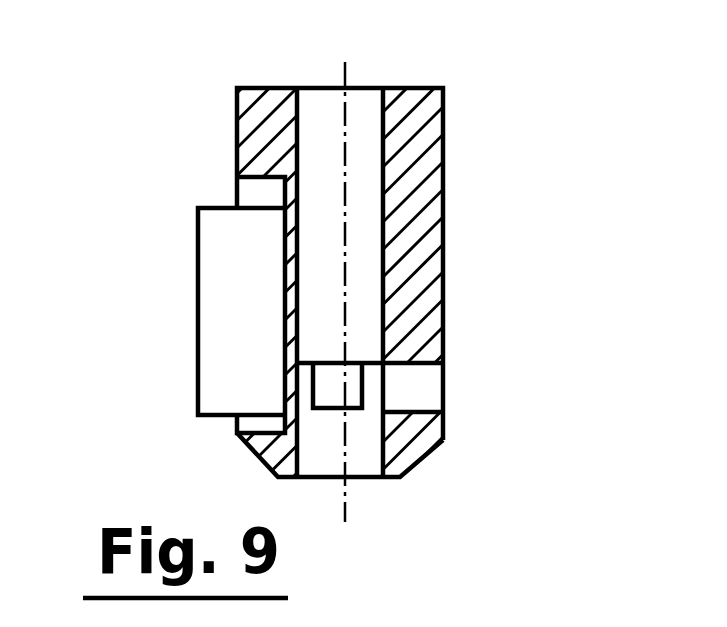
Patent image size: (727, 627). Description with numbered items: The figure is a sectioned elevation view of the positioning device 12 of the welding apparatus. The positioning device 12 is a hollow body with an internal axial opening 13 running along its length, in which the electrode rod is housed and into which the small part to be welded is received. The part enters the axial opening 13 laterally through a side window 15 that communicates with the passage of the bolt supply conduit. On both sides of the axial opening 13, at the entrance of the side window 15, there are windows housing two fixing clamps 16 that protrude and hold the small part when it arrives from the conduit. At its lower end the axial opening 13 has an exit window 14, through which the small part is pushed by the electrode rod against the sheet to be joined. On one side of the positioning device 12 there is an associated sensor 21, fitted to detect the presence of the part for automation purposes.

The positioning device 12 is at (403, 220).
The internal axial opening 13 is at (360, 158).
The exit window 14 is at (355, 463).
The side window 15 is at (417, 385).
The fixing clamps 16 is at (330, 385).
The sensor 21 is at (235, 277).